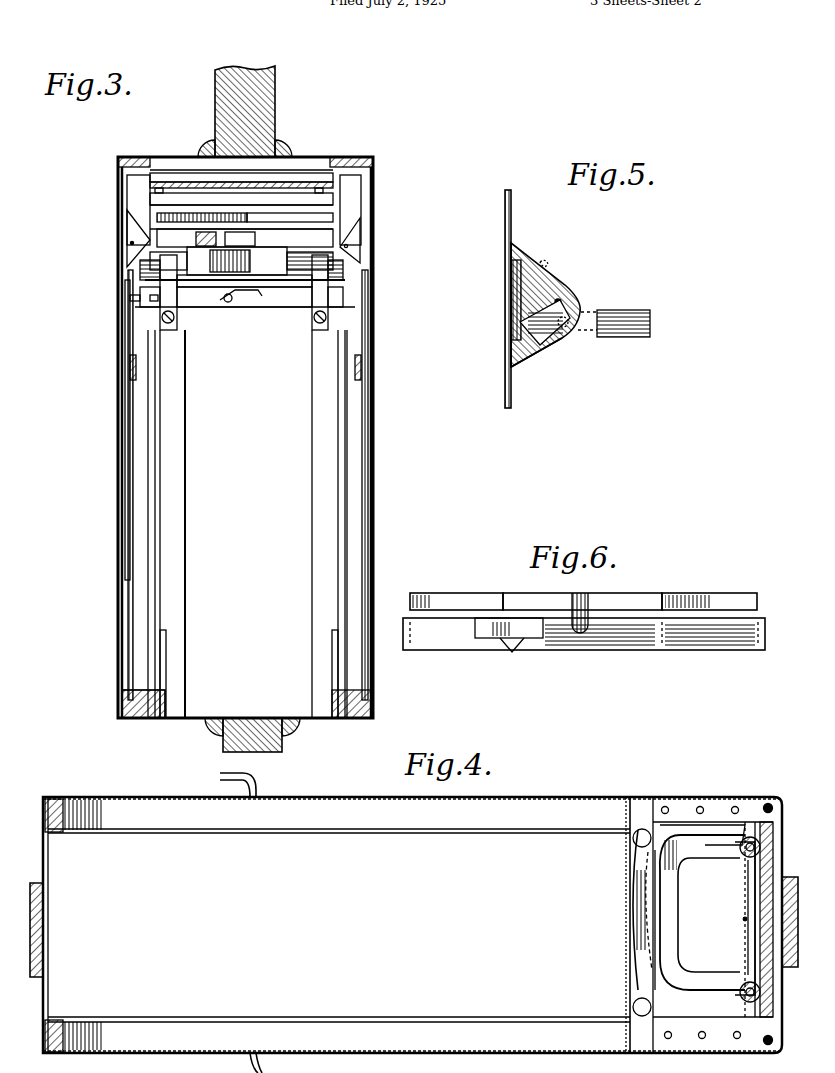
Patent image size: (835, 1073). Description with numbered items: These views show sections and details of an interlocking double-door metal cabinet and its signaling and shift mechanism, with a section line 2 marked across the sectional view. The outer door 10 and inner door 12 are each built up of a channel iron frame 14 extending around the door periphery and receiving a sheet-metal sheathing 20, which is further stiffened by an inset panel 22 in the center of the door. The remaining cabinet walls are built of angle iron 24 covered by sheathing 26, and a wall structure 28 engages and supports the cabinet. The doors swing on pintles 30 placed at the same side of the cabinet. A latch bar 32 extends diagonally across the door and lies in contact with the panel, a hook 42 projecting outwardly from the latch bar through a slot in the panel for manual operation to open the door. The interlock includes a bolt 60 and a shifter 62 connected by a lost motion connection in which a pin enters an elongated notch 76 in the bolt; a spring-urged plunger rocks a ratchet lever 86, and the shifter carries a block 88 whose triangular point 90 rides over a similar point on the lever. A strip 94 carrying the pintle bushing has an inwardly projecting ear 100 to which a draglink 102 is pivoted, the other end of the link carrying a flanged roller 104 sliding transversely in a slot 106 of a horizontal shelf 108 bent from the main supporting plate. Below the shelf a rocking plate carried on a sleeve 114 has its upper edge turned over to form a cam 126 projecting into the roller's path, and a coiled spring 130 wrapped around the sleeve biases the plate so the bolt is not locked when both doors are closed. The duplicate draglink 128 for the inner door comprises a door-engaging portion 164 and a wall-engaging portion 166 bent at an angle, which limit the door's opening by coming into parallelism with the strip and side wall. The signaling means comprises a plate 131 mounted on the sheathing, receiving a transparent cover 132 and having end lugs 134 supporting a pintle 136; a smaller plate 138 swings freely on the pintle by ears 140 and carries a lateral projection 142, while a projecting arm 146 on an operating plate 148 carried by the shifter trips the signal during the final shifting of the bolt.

In FIG. 3, the section line 2 is at (254, 48).
In FIG. 4, the section line 2 is at (232, 760).
In FIG. 4, the outer door 10 is at (375, 1045).
In FIG. 4, the inner door 12 is at (305, 812).
In FIG. 3, the channel iron frame 14 is at (125, 700).
In FIG. 3, the sheathing 20 is at (128, 620).
In FIG. 5, the sheathing 20 is at (503, 210).
In FIG. 3, the inset panel 22 is at (130, 497).
In FIG. 3, the angle iron 24 is at (140, 718).
In FIG. 4, the angle iron 24 is at (60, 1020).
In FIG. 3, the sheathing 26 is at (172, 718).
In FIG. 4, the sheathing 26 is at (50, 990).
In FIG. 3, the wall structure 28 is at (260, 102).
In FIG. 4, the pintle 30 is at (767, 800).
In FIG. 3, the latch bar 32 is at (130, 371).
In FIG. 4, the hook 42 is at (255, 795).
In FIG. 3, the bolt 60 is at (278, 291).
In FIG. 3, the shifter 62 is at (183, 267).
In FIG. 6, the shifter 62 is at (710, 632).
In FIG. 3, the notch 76 is at (250, 290).
In FIG. 3, the ratchet lever 86 is at (258, 276).
In FIG. 6, the block 88 is at (490, 640).
In FIG. 6, the triangular point 90 is at (512, 650).
In FIG. 4, the strip 94 is at (648, 807).
In FIG. 4, the ear 100 is at (636, 1004).
In FIG. 3, the draglink 102 is at (285, 202).
In FIG. 4, the draglink 102 is at (642, 970).
In FIG. 4, the flanged roller 104 is at (735, 826).
In FIG. 4, the slot 106 is at (745, 918).
In FIG. 3, the horizontal shelf 108 is at (228, 185).
In FIG. 4, the horizontal shelf 108 is at (738, 886).
In FIG. 3, the sleeve 114 is at (290, 228).
In FIG. 3, the cam 126 is at (265, 188).
In FIG. 4, the cam 126 is at (755, 937).
In FIG. 3, the draglink 128 is at (193, 171).
In FIG. 4, the draglink 128 is at (640, 860).
In FIG. 3, the coiled spring 130 is at (225, 222).
In FIG. 5, the plate 131 is at (540, 228).
In FIG. 5, the transparent cover 132 is at (508, 300).
In FIG. 3, the end lug 134 is at (355, 254).
In FIG. 5, the end lug 134 is at (530, 362).
In FIG. 5, the pintle 136 is at (566, 298).
In FIG. 5, the smaller plate 138 is at (545, 343).
In FIG. 5, the ear 140 is at (561, 282).
In FIG. 5, the lateral projection 142 is at (545, 255).
In FIG. 5, the projecting arm 146 is at (612, 318).
In FIG. 6, the projecting arm 146 is at (476, 590).
In FIG. 3, the operating plate 148 is at (238, 252).
In FIG. 6, the operating plate 148 is at (620, 605).
In FIG. 4, the door-engaging portion 164 is at (650, 910).
In FIG. 4, the wall-engaging portion 166 is at (700, 982).